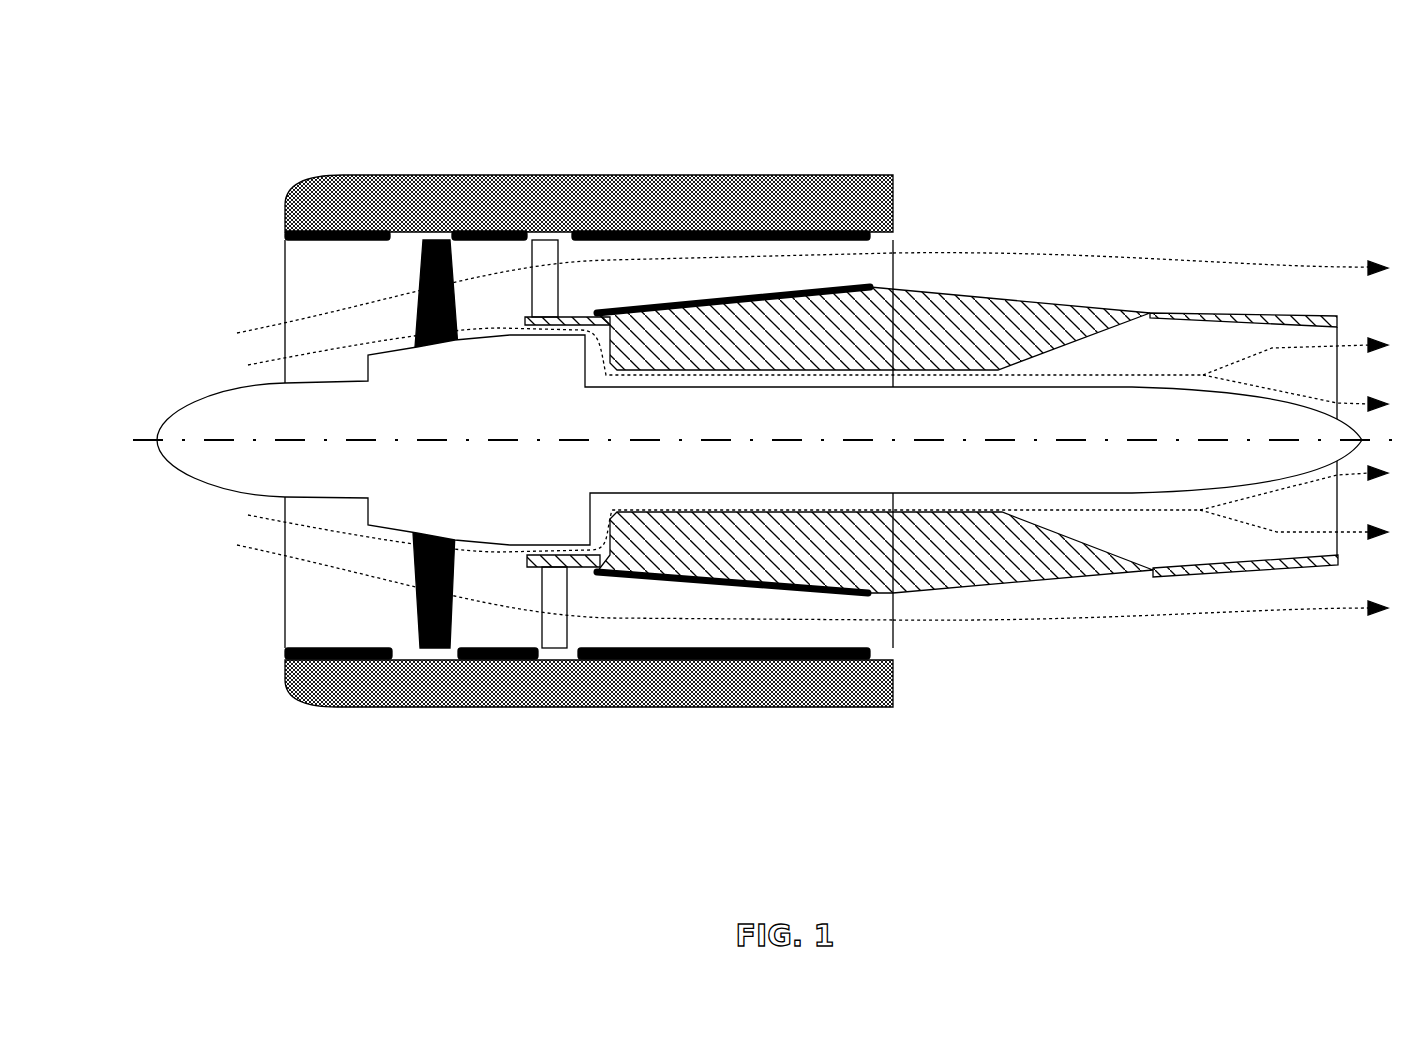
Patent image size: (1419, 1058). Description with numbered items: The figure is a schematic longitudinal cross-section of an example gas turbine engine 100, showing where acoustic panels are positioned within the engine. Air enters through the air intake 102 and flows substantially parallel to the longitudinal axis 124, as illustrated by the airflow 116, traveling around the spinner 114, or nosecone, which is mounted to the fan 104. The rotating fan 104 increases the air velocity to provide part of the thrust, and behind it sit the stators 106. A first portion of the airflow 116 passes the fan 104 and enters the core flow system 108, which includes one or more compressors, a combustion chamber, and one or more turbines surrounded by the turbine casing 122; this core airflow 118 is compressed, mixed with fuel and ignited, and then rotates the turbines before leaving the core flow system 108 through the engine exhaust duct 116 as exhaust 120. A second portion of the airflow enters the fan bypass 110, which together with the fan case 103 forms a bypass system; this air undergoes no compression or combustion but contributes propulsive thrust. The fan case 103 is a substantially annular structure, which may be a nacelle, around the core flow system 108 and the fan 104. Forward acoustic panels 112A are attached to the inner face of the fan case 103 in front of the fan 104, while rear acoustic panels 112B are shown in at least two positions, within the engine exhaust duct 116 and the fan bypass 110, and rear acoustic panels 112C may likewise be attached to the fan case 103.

The gas turbine engine 100 is at (262, 70).
The air intake 102 is at (328, 286).
The fan case 103 is at (670, 195).
The fan 104 is at (440, 240).
The stators 106 is at (558, 240).
The core flow system 108 is at (1132, 387).
The fan bypass 110 is at (893, 253).
The forward acoustic panels 112A is at (336, 232).
The rear acoustic panels 112B is at (727, 230).
The rear acoustic panels 112C is at (494, 232).
The spinner 114 is at (210, 398).
The airflow 116 is at (268, 323).
The airflow 118 is at (1073, 373).
The exhaust 120 is at (1312, 397).
The turbine casing 122 is at (1157, 577).
The longitudinal axis 124 is at (148, 450).